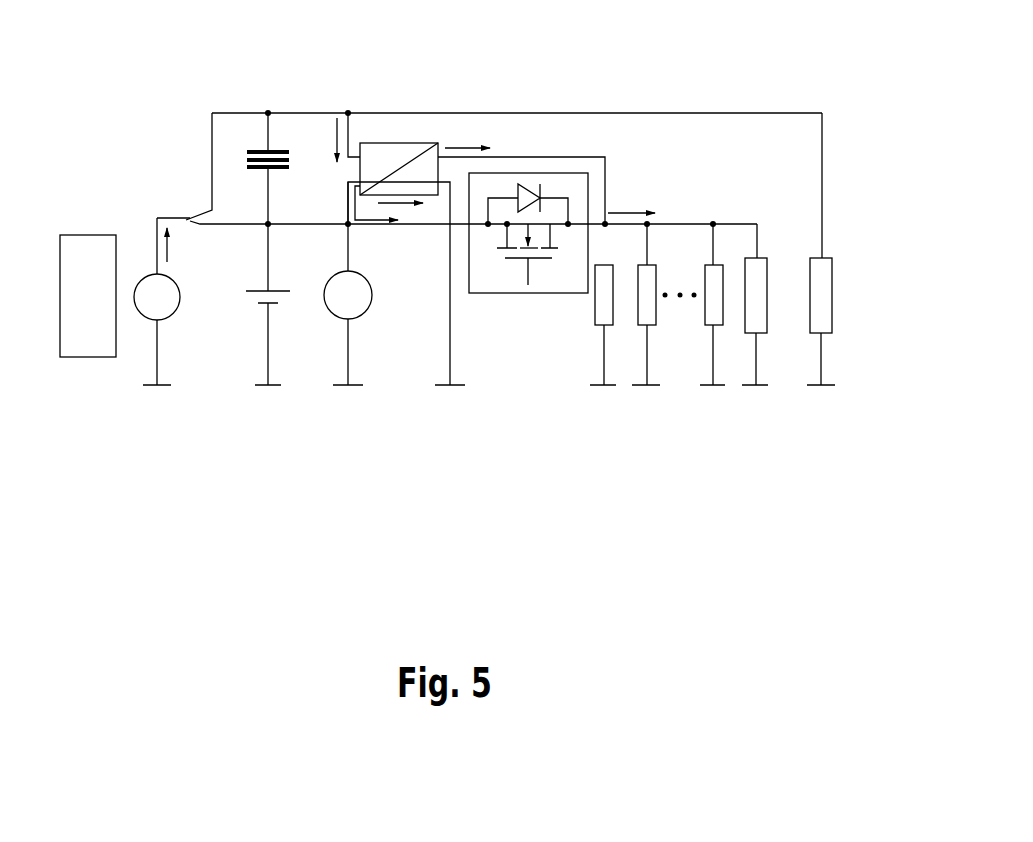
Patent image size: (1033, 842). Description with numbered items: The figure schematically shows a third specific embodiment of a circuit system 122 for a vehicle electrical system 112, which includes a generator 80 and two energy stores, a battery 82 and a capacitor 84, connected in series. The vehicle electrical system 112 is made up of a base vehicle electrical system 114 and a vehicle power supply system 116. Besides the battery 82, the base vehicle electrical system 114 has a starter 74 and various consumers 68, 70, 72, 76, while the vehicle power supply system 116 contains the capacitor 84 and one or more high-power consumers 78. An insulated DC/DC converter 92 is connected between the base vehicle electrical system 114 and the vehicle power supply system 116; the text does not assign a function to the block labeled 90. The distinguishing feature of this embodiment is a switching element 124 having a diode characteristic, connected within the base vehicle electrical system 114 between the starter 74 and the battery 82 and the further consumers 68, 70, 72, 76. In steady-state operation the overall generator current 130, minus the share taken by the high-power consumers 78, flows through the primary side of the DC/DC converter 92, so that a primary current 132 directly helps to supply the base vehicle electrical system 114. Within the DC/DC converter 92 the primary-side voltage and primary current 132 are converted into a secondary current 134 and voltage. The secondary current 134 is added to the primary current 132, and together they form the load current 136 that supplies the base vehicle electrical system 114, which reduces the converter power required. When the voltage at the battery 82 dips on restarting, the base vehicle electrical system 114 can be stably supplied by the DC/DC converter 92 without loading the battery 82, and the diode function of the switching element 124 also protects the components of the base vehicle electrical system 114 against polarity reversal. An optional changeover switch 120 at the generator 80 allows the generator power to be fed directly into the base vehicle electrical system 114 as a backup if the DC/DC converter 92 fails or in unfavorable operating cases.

The consumer 68 is at (591, 340).
The consumer 70 is at (631, 337).
The consumer 72 is at (698, 338).
The starter 74 is at (372, 330).
The consumer 76 is at (743, 340).
The high-power consumer 78 is at (796, 340).
The generator 80 is at (181, 330).
The battery 82 is at (245, 325).
The capacitor 84 is at (253, 148).
The control unit 90 is at (73, 362).
The insulated DC/DC converter 92 is at (398, 140).
The vehicle electrical system 112 is at (763, 85).
The base vehicle electrical system 114 is at (620, 440).
The vehicle power supply system 116 is at (639, 108).
The changeover switch 120 is at (192, 210).
The circuit system 122 is at (265, 445).
The switching element 124 is at (520, 308).
The generator current 130 is at (173, 245).
The primary current 132 is at (333, 150).
The secondary current 134 is at (464, 142).
The load current 136 is at (624, 208).